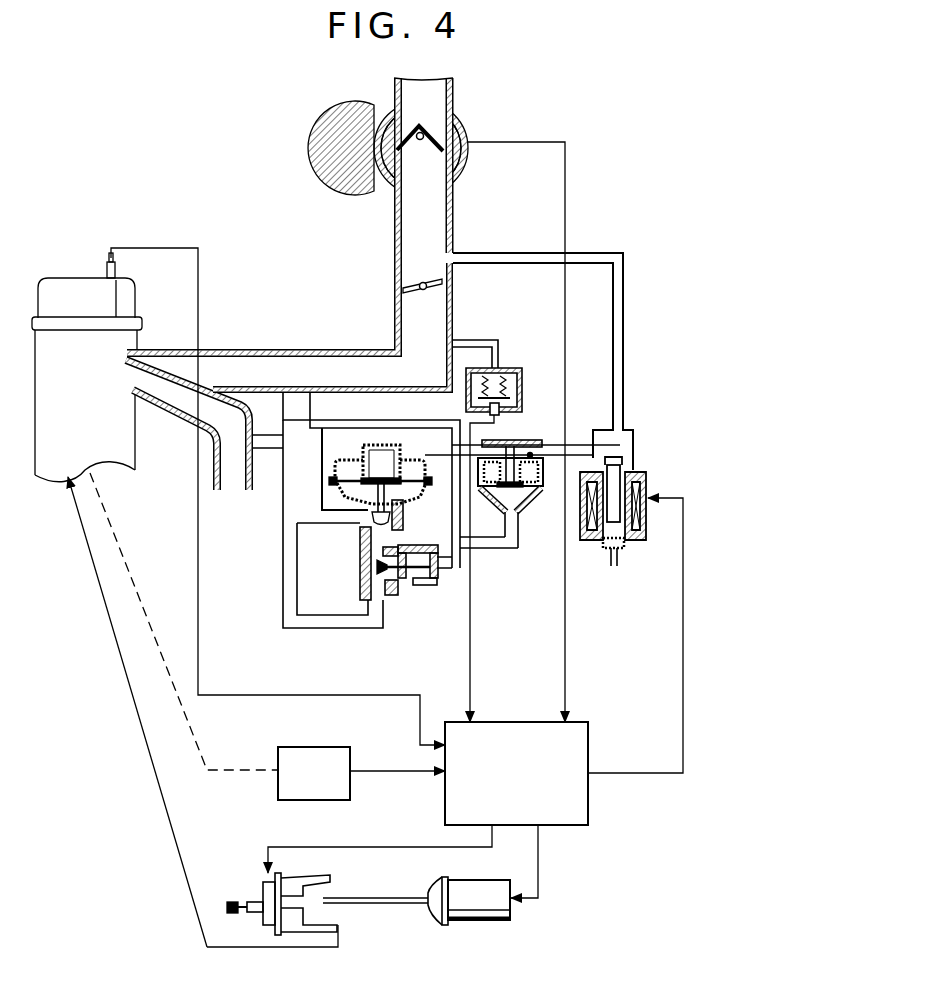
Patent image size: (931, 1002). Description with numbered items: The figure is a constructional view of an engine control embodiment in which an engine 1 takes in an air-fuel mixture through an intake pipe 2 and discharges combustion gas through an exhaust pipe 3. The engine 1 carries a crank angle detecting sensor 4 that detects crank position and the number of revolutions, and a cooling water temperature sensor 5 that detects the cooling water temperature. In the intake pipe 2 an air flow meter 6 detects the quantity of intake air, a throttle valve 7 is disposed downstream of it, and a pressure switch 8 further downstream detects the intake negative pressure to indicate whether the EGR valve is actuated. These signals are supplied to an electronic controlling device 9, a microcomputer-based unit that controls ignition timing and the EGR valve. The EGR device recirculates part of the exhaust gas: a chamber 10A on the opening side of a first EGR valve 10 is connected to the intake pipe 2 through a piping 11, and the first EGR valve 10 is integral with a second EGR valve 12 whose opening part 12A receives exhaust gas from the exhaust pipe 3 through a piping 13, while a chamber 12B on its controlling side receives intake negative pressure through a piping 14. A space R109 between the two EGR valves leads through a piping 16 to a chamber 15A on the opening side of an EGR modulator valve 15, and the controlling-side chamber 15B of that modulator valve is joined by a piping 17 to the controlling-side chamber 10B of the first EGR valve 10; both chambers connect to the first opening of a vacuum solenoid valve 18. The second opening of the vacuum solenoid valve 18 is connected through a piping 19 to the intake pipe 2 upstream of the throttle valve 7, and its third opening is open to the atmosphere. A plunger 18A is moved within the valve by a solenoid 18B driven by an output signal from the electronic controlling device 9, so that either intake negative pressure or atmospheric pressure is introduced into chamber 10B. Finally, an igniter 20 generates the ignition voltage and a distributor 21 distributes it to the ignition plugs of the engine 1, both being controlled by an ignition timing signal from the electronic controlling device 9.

The engine 1 is at (77, 281).
The intake pipe 2 is at (412, 229).
The exhaust pipe 3 is at (182, 400).
The crank angle detecting sensor 4 is at (318, 747).
The cooling water temperature sensor 5 is at (117, 266).
The air flow meter 6 is at (412, 154).
The throttle valve 7 is at (405, 284).
The pressure switch 8 is at (522, 385).
The electronic controlling device 9 is at (504, 722).
The first EGR valve 10 is at (452, 497).
The chamber on the side of an opening part of the first EGR valve 10A is at (362, 517).
The chamber on the controlling side of the first EGR valve 10B is at (383, 455).
The piping 11 is at (310, 523).
The second EGR valve 12 is at (415, 585).
The opening part for introducing the exhaust gas 12A is at (386, 605).
The chamber on the controlling side of the second EGR valve 12B is at (430, 585).
The piping 13 is at (316, 628).
The piping 14 is at (440, 565).
The EGR modulator valve 15 is at (523, 499).
The chamber on the side of an opening part of the EGR modulator valve 15A is at (514, 512).
The chamber on the controlling side of the EGR modulator valve 15B is at (540, 492).
The piping 16 is at (493, 548).
The piping 17 is at (548, 440).
The vacuum solenoid valve 18 is at (634, 524).
The plunger 18A is at (615, 472).
The solenoid 18B is at (638, 540).
The piping 19 is at (623, 345).
The igniter 20 is at (482, 920).
The distributor 21 is at (262, 895).
The space R109 is at (342, 563).